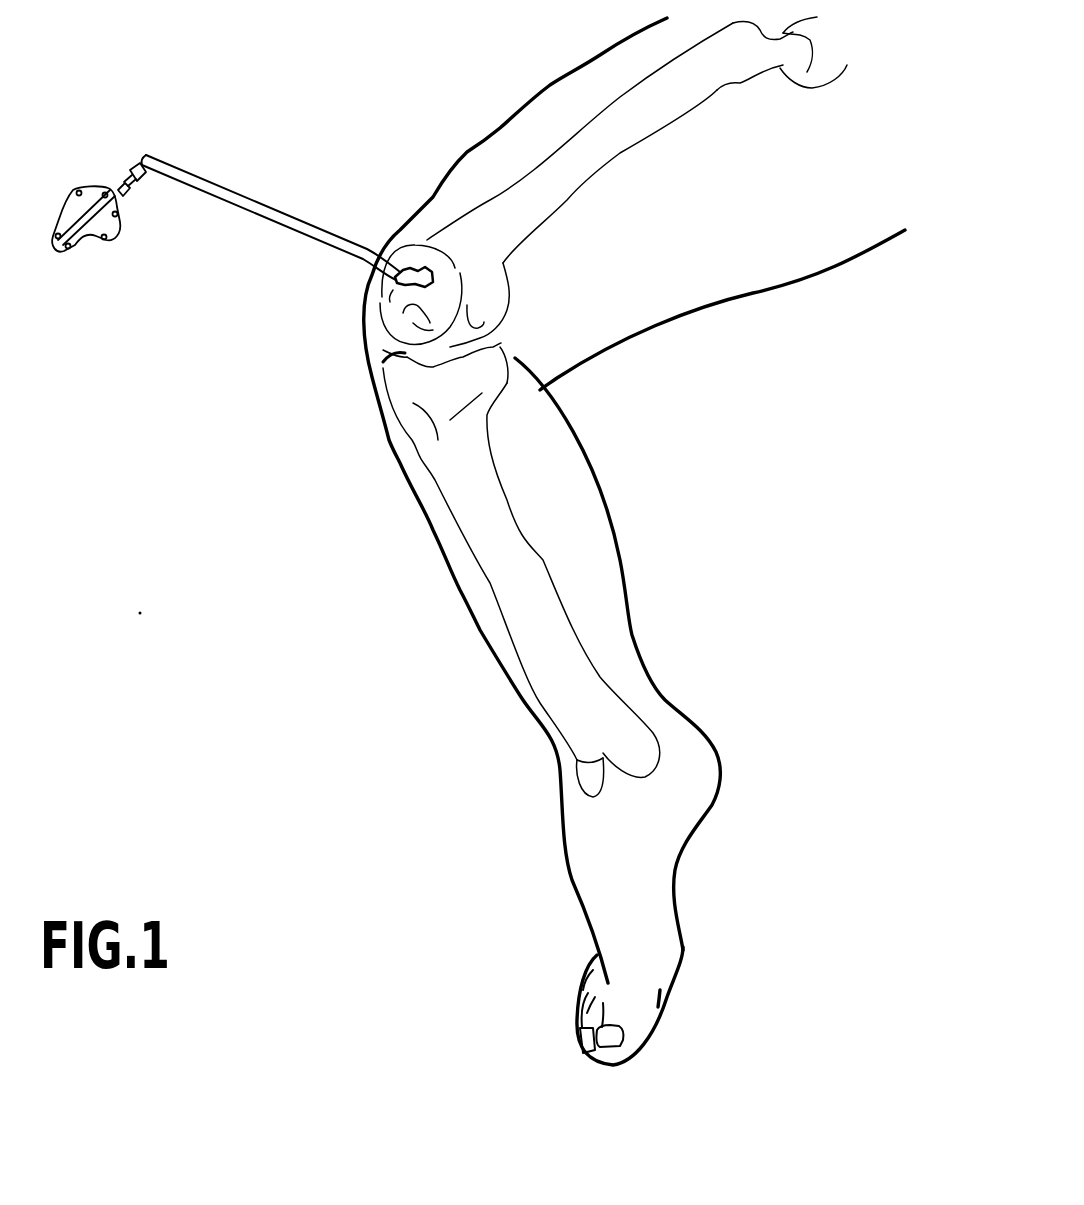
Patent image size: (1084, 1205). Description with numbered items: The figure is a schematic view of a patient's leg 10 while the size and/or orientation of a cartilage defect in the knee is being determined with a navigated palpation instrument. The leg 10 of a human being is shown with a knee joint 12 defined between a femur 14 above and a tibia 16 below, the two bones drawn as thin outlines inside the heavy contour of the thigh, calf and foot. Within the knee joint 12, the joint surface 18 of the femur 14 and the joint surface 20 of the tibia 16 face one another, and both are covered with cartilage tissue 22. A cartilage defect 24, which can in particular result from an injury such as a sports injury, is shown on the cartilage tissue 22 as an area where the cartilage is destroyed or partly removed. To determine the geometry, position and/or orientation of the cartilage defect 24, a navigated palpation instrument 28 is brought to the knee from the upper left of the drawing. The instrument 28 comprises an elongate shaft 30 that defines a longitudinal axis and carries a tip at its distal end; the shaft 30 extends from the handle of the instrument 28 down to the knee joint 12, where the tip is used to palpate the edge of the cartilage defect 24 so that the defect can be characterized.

The leg 10 is at (318, 467).
The knee joint 12 is at (353, 347).
The femur 14 is at (553, 180).
The tibia 16 is at (527, 587).
The joint surface of the femur 18 is at (393, 318).
The joint surface of the tibia 20 is at (397, 370).
The cartilage tissue 22 is at (445, 311).
The cartilage defect 24 is at (432, 271).
The navigated palpation instrument 28 is at (215, 135).
The elongate shaft 30 is at (272, 211).